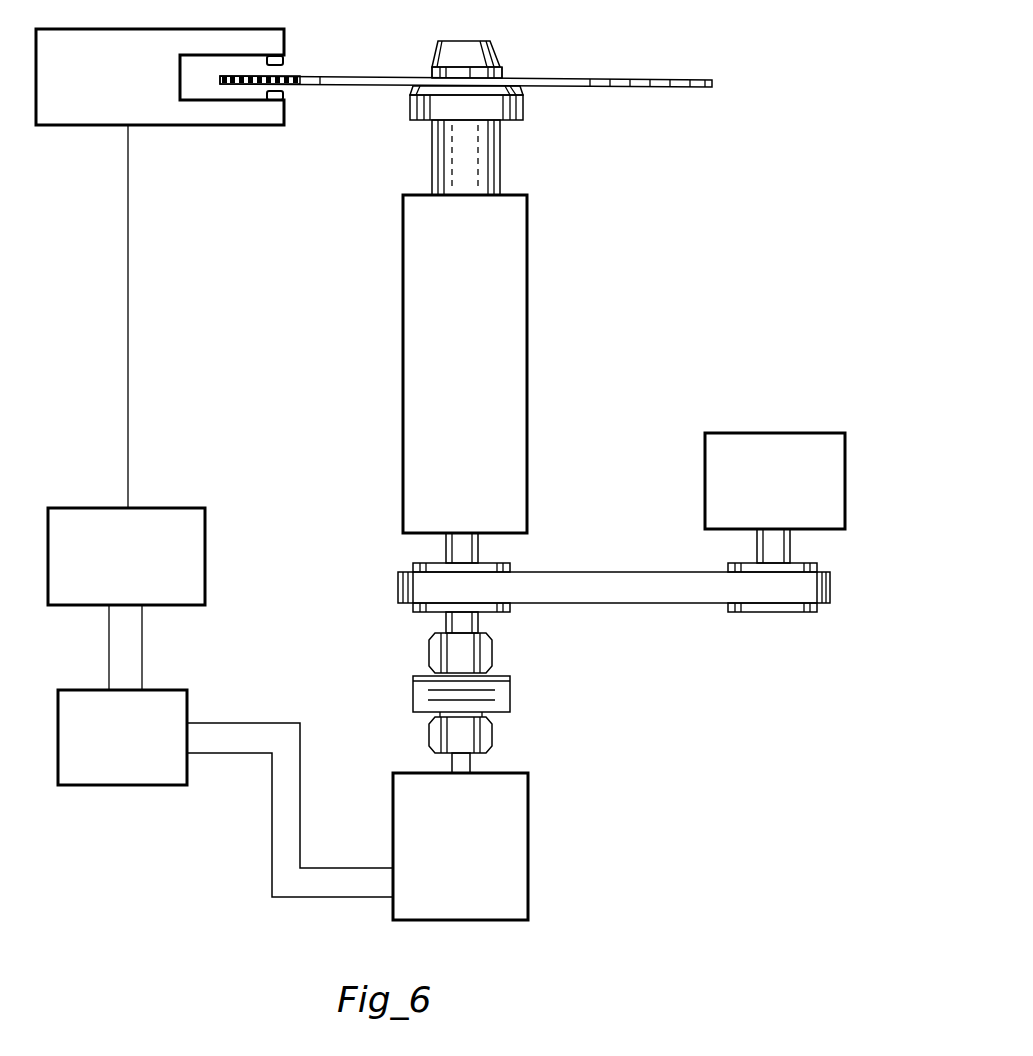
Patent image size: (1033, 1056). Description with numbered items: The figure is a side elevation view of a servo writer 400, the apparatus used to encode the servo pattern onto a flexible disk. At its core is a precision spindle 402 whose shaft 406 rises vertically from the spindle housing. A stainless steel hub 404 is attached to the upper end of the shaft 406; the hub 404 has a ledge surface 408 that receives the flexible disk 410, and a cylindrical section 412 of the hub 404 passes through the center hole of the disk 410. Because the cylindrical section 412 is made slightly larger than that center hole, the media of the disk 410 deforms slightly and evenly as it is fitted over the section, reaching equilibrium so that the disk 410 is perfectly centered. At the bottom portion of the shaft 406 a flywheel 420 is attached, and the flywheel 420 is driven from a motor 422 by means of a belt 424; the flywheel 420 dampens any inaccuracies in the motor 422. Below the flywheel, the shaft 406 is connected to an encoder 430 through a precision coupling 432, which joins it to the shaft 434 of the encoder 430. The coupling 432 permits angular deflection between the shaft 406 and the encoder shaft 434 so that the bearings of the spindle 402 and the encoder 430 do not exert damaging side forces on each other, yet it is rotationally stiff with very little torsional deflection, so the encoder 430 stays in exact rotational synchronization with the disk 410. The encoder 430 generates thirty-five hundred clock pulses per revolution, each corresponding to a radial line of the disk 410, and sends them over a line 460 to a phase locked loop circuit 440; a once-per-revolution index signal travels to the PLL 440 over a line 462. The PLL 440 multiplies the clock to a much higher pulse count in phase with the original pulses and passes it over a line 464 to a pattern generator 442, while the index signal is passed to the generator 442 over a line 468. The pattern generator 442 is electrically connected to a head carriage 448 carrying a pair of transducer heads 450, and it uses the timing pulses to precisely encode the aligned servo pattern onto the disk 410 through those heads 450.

The servo writer 400 is at (222, 845).
The precision spindle 402 is at (482, 337).
The stainless steel hub 404 is at (478, 30).
The shaft 406 is at (432, 162).
The ledge surface 408 is at (508, 86).
The flexible disk 410 is at (645, 80).
The cylindrical section 412 is at (432, 74).
The flywheel 420 is at (412, 566).
The motor 422 is at (770, 433).
The belt 424 is at (610, 572).
The encoder 430 is at (528, 868).
The precision coupling 432 is at (510, 698).
The shaft of encoder 434 is at (452, 763).
The phase locked loop circuit 440 is at (160, 690).
The pattern generator 442 is at (148, 508).
The head carriage 448 is at (126, 90).
The transducer heads 450 is at (287, 98).
The line 460 is at (254, 723).
The line 462 is at (272, 800).
The line 464 is at (142, 650).
The line 468 is at (109, 635).